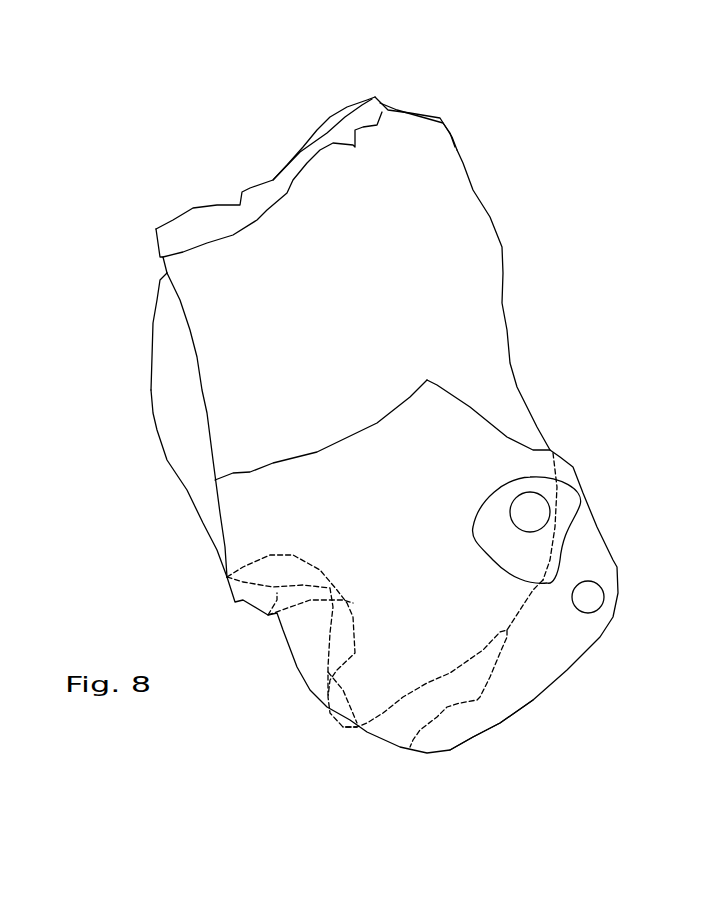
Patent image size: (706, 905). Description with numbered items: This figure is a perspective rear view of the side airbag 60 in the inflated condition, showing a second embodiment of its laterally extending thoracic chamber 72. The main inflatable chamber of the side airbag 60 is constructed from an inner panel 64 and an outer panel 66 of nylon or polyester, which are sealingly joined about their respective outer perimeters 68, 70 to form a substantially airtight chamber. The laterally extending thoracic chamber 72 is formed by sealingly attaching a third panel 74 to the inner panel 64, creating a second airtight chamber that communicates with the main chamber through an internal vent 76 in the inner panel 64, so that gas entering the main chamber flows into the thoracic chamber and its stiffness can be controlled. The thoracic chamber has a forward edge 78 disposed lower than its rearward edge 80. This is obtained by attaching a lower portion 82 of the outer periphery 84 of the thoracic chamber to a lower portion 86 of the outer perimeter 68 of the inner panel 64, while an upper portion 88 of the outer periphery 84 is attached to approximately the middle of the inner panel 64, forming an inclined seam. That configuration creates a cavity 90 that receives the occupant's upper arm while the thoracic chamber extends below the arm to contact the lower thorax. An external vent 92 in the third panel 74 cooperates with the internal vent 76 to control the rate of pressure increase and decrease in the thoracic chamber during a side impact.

The side airbag 60 is at (490, 98).
The inner panel 64 is at (190, 297).
The outer panel 66 is at (163, 397).
The outer perimeter of inner panel 68 is at (373, 125).
The outer perimeter of outer panel 70 is at (160, 282).
The laterally extending thoracic chamber 72 is at (273, 527).
The third panel 74 is at (480, 733).
The internal vent 76 is at (530, 500).
The forward edge 78 is at (562, 452).
The rearward edge 80 is at (240, 472).
The lower portion of outer periphery of thoracic chamber 82 is at (363, 728).
The outer periphery of thoracic chamber 84 is at (322, 692).
The lower portion of outer periphery of inner panel 86 is at (413, 730).
The upper portion of outer periphery of thoracic chamber 88 is at (467, 210).
The cavity 90 is at (292, 278).
The external vent 92 is at (598, 586).